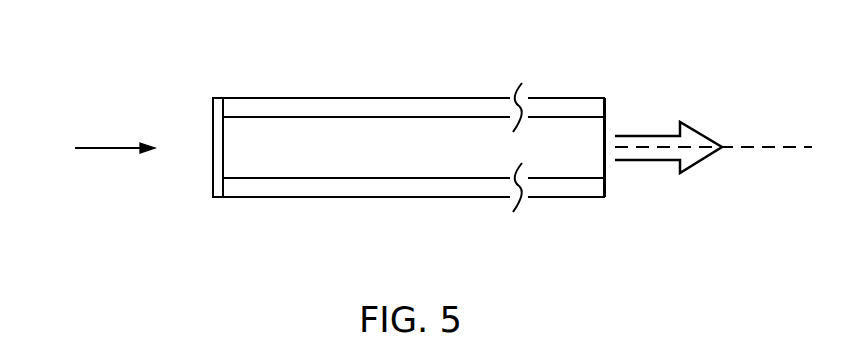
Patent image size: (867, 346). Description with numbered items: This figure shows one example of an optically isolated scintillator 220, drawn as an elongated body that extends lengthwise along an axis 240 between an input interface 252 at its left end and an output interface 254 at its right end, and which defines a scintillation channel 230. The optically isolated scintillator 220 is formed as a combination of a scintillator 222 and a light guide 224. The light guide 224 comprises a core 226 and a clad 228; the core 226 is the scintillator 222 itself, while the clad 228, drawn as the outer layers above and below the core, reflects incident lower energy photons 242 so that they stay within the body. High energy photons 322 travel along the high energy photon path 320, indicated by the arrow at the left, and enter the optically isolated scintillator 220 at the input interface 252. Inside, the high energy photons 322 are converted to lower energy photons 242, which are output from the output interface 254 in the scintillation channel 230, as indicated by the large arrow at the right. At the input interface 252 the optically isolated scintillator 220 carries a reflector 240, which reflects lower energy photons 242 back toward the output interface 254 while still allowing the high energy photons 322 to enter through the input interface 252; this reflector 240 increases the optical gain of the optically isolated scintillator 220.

The optically isolated scintillator 220 is at (413, 76).
The scintillator 222 is at (451, 164).
The light guide 224 is at (333, 219).
The core 226 is at (323, 164).
The clad 228 is at (291, 112).
The scintillation channel 230 is at (817, 144).
The reflector 240 is at (211, 137).
The lower energy photons 242 is at (640, 147).
The input interface 252 is at (211, 172).
The output interface 254 is at (605, 168).
The high energy photon path 320 is at (97, 145).
The high energy photons 322 is at (110, 153).